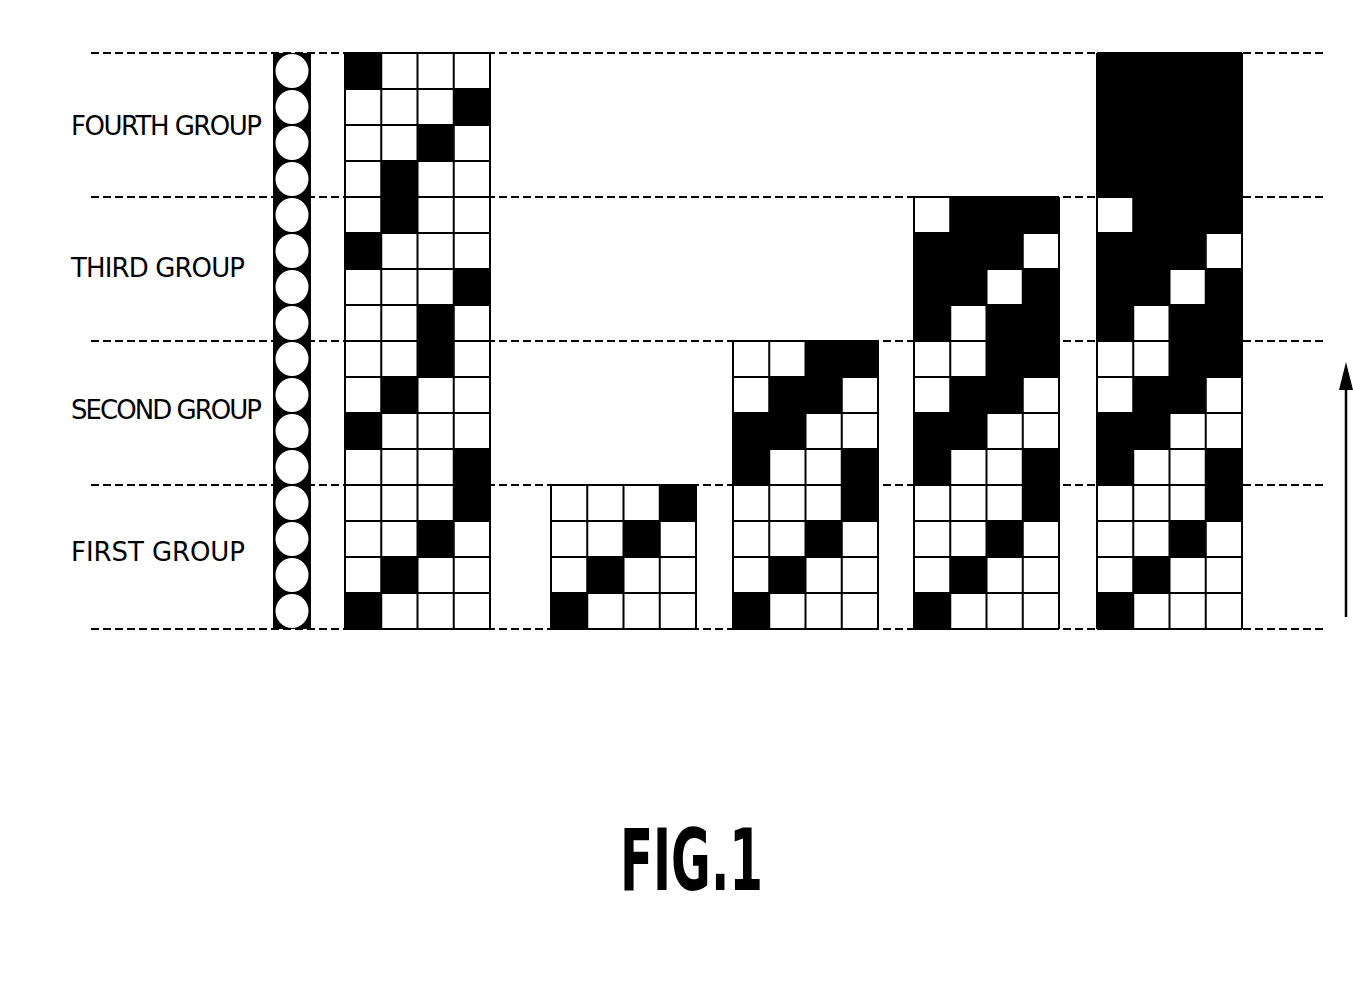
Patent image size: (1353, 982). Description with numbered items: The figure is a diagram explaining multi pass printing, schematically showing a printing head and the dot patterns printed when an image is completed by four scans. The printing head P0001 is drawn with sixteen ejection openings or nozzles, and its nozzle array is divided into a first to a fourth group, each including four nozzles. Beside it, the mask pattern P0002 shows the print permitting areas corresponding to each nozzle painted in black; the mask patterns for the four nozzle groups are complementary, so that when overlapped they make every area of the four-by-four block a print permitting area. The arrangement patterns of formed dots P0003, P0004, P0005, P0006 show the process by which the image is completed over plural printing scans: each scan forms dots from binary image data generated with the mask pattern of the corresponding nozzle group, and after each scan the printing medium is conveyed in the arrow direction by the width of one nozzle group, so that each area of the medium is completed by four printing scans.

The printing head P0001 is at (306, 630).
The mask pattern P0002 is at (490, 630).
The arrangement pattern of formed dots after first printing scan P0003 is at (697, 630).
The arrangement pattern of formed dots after second printing scan P0004 is at (878, 630).
The arrangement pattern of formed dots after third printing scan P0005 is at (1060, 630).
The arrangement pattern of formed dots after fourth printing scan P0006 is at (1242, 630).